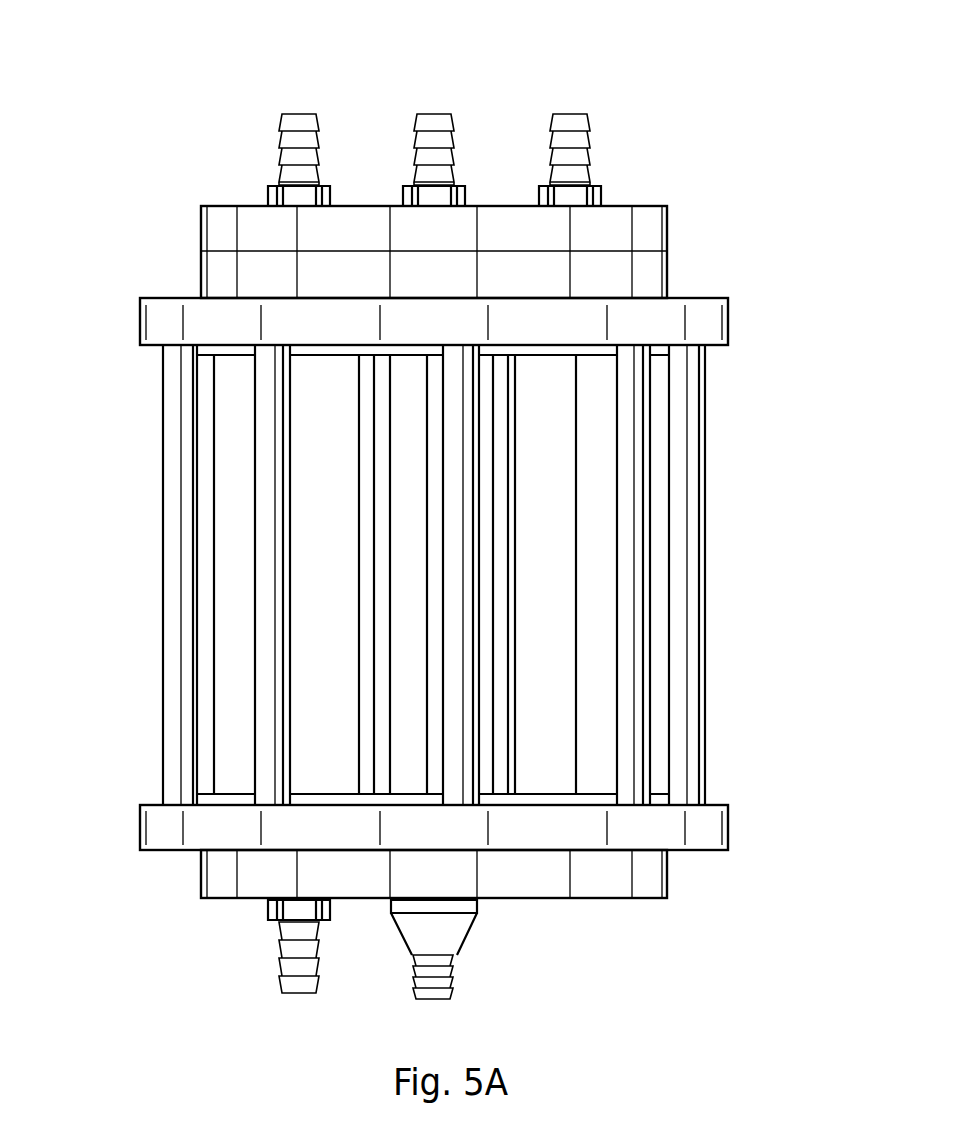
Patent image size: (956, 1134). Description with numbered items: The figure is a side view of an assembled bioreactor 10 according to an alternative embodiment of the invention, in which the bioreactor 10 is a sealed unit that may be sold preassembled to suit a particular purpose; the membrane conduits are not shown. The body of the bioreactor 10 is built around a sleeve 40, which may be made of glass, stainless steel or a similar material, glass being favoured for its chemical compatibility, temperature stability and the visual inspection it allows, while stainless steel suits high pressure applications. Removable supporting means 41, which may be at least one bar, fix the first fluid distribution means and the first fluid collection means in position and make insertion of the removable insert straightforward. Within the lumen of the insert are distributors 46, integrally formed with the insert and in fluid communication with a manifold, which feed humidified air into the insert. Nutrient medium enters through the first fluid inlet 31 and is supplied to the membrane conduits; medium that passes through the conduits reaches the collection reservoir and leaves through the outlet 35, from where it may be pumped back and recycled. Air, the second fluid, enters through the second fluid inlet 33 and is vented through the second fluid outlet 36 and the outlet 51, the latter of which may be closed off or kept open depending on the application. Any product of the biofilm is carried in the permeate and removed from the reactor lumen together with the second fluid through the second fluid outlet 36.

The bioreactor 10 is at (698, 137).
The first fluid inlet 31 is at (282, 986).
The second fluid inlet 33 is at (302, 113).
The outlet 35 is at (575, 110).
The second fluid outlet 36 is at (448, 933).
The sleeve 40 is at (217, 535).
The supporting means 41 is at (182, 664).
The distributors 46 is at (515, 502).
The outlet 51 is at (432, 110).